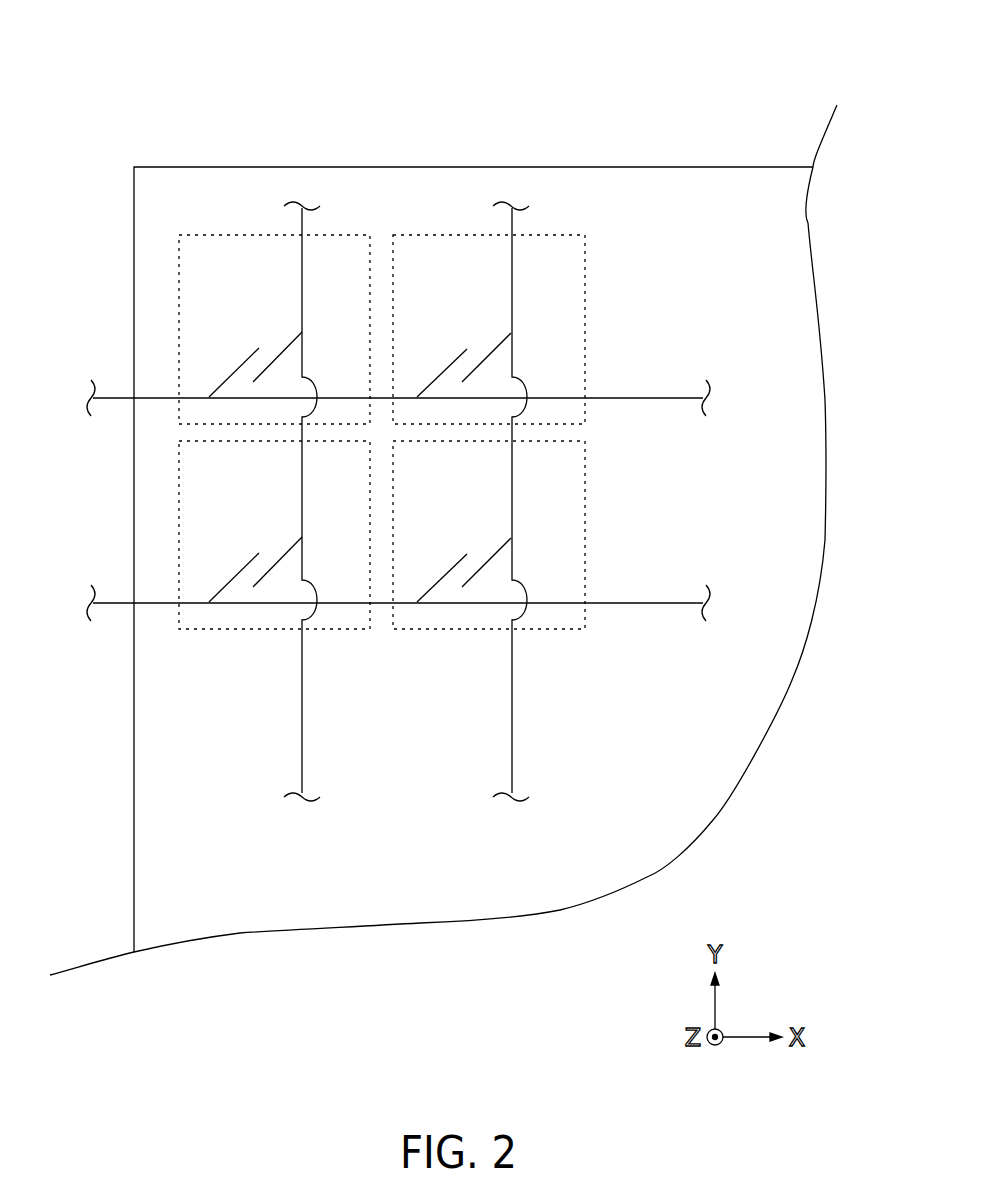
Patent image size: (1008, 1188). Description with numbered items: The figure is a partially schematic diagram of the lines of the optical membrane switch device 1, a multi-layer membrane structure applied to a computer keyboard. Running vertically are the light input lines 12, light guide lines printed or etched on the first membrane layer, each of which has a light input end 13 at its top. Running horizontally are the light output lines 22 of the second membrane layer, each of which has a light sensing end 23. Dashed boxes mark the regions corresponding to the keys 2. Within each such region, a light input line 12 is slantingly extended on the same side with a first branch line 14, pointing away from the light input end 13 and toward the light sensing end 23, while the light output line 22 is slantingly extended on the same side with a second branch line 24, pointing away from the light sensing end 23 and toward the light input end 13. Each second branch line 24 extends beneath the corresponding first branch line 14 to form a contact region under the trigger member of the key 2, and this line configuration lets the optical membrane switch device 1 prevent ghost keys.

The optical membrane switch device 1 is at (130, 128).
The keys 2 is at (555, 235).
The light input lines 12 is at (303, 292).
The light input end 13 is at (300, 223).
The first branch lines 14 is at (282, 348).
The light output lines 22 is at (165, 398).
The light sensing end 23 is at (112, 398).
The second branch lines 24 is at (233, 368).